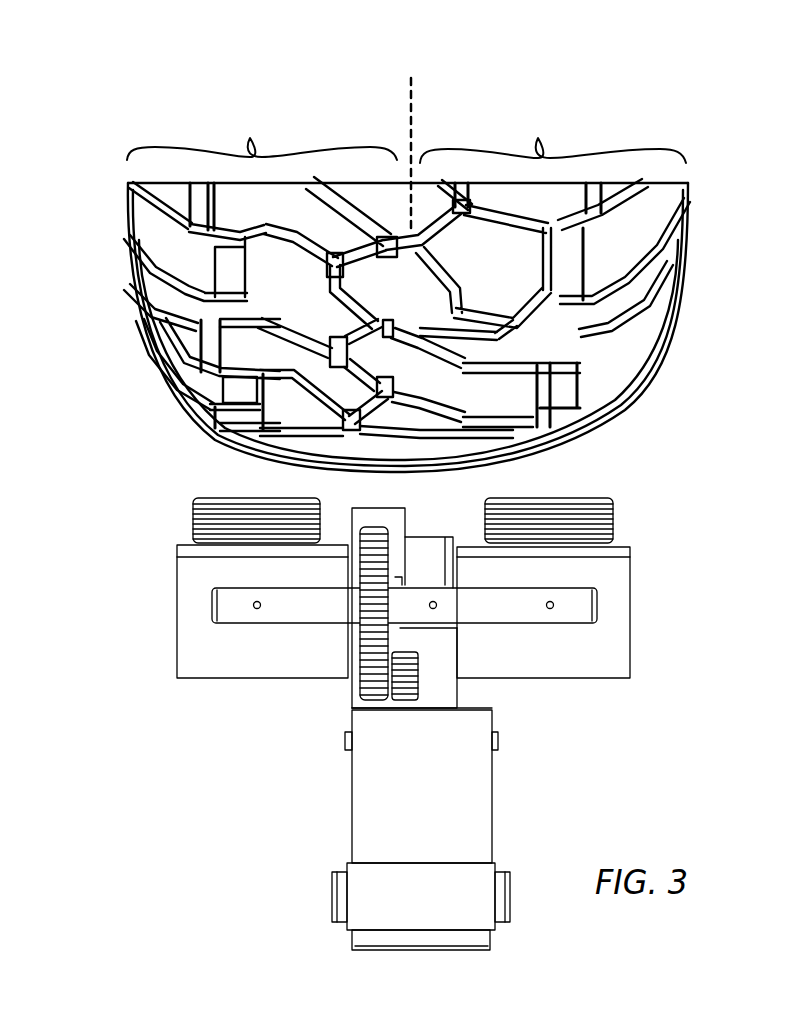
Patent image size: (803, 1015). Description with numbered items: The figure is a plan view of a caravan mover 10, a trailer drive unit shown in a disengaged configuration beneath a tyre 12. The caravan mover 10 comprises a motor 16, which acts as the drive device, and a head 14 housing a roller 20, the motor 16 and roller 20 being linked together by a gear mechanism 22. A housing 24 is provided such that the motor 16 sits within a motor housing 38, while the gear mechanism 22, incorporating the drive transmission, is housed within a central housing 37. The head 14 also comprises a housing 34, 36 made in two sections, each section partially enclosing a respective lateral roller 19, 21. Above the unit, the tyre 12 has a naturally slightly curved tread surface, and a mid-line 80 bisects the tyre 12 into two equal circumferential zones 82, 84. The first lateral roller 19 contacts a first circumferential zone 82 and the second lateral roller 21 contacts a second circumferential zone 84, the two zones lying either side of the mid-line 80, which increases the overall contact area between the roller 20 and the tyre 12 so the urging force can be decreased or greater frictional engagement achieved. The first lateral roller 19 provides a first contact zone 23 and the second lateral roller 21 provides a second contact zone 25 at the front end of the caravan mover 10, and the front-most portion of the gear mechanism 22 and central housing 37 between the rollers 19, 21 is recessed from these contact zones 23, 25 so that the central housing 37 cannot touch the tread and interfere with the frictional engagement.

The caravan mover 10 is at (250, 889).
The tyre 12 is at (683, 217).
The head 14 is at (557, 453).
The motor 16 is at (473, 808).
The first lateral roller 19 is at (192, 527).
The roller 20 is at (648, 513).
The second lateral roller 21 is at (617, 527).
The gear mechanism 22 is at (360, 672).
The first contact zone 23 is at (287, 498).
The housing 24 is at (493, 712).
The second contact zone 25 is at (533, 498).
The head housing section 34 is at (182, 647).
The head housing section 36 is at (618, 662).
The central housing 37 is at (363, 507).
The motor housing 38 is at (382, 815).
The mid-line 80 is at (417, 100).
The first circumferential zone 82 is at (262, 130).
The second circumferential zone 84 is at (553, 131).